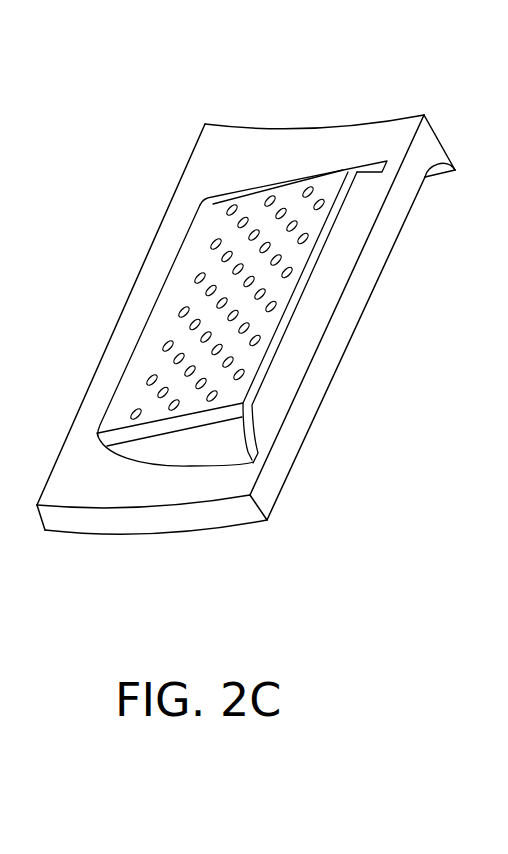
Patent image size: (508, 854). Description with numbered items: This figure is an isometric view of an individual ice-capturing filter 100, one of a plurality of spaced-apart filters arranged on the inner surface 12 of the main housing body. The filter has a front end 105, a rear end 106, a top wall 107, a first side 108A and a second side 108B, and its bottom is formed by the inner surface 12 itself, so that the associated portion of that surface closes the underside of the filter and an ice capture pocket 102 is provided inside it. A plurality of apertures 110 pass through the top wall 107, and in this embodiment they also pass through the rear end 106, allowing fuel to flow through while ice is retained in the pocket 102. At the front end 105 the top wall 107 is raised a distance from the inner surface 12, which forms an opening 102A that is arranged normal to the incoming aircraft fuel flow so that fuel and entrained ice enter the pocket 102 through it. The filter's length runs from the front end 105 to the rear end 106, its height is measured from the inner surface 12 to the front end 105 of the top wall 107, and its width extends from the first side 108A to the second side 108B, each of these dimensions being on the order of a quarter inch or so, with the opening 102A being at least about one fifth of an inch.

The ice-capturing filter 100 is at (148, 82).
The ice capture pocket 102 is at (347, 230).
The opening 102A is at (272, 394).
The front end 105 is at (303, 279).
The rear end 106 is at (160, 300).
The top wall 107 is at (227, 233).
The first side 108A is at (286, 178).
The second side 108B is at (183, 447).
The apertures 110 is at (160, 388).
The inner surface 12 is at (303, 338).